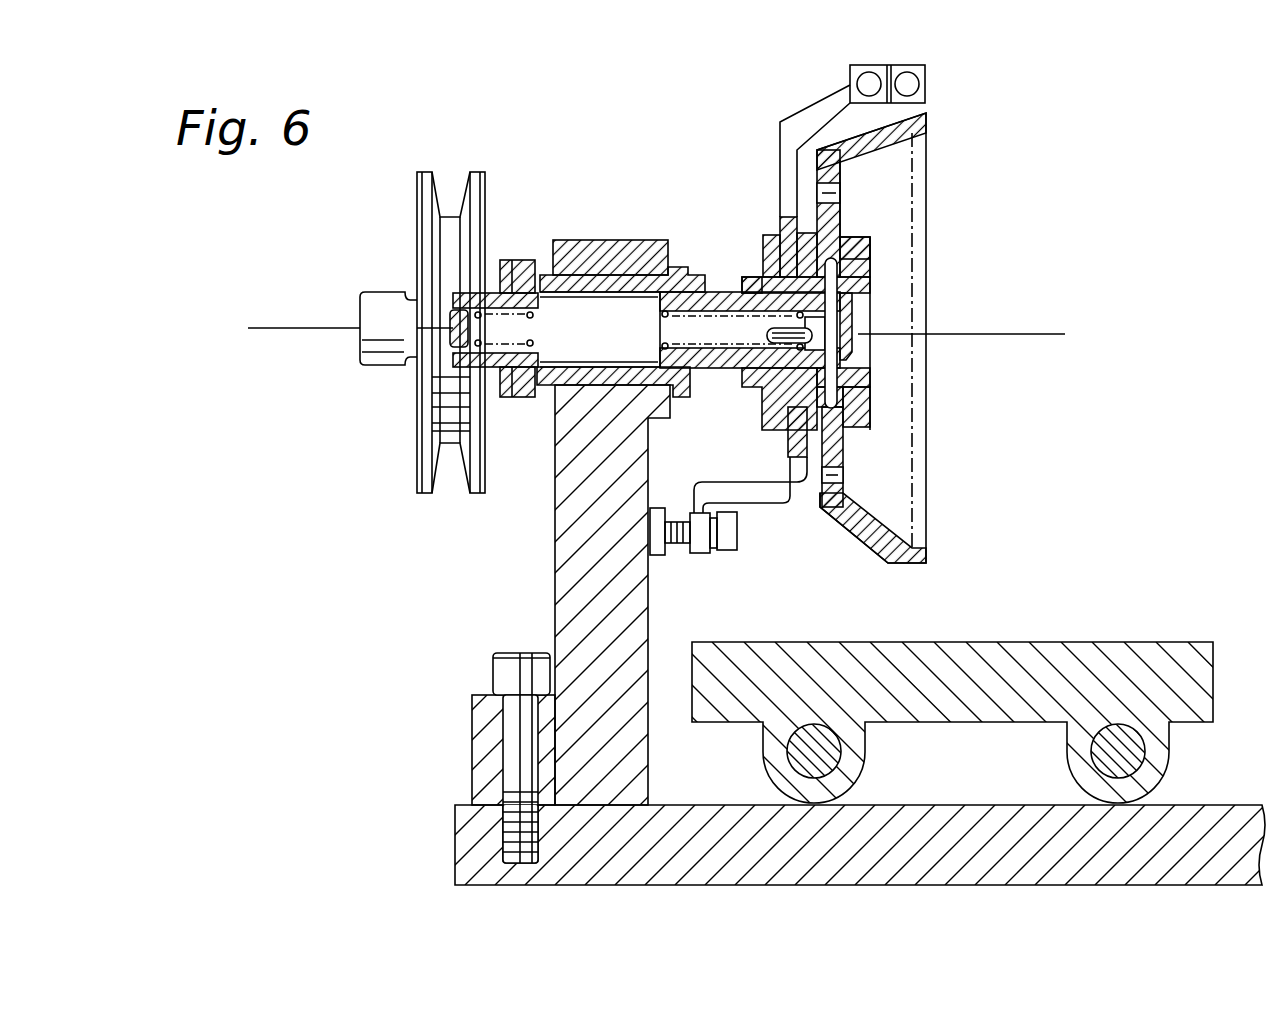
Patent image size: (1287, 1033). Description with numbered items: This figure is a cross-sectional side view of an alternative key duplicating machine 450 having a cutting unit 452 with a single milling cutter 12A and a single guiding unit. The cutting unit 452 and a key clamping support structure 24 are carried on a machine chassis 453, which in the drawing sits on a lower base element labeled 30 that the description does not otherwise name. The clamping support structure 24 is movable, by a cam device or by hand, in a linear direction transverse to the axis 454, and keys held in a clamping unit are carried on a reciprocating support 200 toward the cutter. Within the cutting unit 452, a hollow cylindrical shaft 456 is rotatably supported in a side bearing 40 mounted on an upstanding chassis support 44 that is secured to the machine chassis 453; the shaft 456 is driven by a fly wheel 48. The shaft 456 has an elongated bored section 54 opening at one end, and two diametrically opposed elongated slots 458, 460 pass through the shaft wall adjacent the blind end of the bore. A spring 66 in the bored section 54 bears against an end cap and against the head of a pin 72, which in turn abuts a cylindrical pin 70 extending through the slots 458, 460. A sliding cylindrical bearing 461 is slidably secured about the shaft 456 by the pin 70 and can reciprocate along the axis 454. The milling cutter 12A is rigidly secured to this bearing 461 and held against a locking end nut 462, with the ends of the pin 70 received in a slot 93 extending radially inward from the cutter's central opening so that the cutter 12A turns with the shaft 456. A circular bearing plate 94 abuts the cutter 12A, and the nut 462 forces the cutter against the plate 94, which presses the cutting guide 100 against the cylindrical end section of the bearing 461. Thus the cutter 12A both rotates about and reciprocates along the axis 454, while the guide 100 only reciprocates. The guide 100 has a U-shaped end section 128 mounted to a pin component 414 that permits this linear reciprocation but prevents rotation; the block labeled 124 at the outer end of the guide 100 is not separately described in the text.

The milling cutter 12A is at (927, 142).
The key clamping support structure 24 is at (1063, 620).
The base 30 is at (470, 858).
The side bearing 40 is at (563, 242).
The upstanding chassis support 44 is at (573, 527).
The fly wheel 48 is at (418, 190).
The elongated bored section 54 is at (508, 330).
The spring 66 is at (718, 387).
The cylindrical pin 70 is at (873, 350).
The pin 72 is at (826, 327).
The slot 93 is at (838, 215).
The circular bearing plate 94 is at (825, 457).
The cutting guide 100 is at (808, 105).
The connector block 124 is at (913, 63).
The U-shaped end section 128 is at (703, 553).
The reciprocating support 200 is at (1172, 650).
The pin component 414 is at (680, 548).
The duplicating key machine 450 is at (560, 196).
The cutting unit 452 is at (712, 191).
The machine chassis 453 is at (470, 822).
The axis 454 is at (1042, 334).
The hollow cylindrical shaft 456 is at (708, 290).
The elongated slot 458 is at (792, 362).
The elongated slot 460 is at (795, 305).
The sliding cylindrical bearing 461 is at (770, 235).
The locking end nut 462 is at (880, 258).